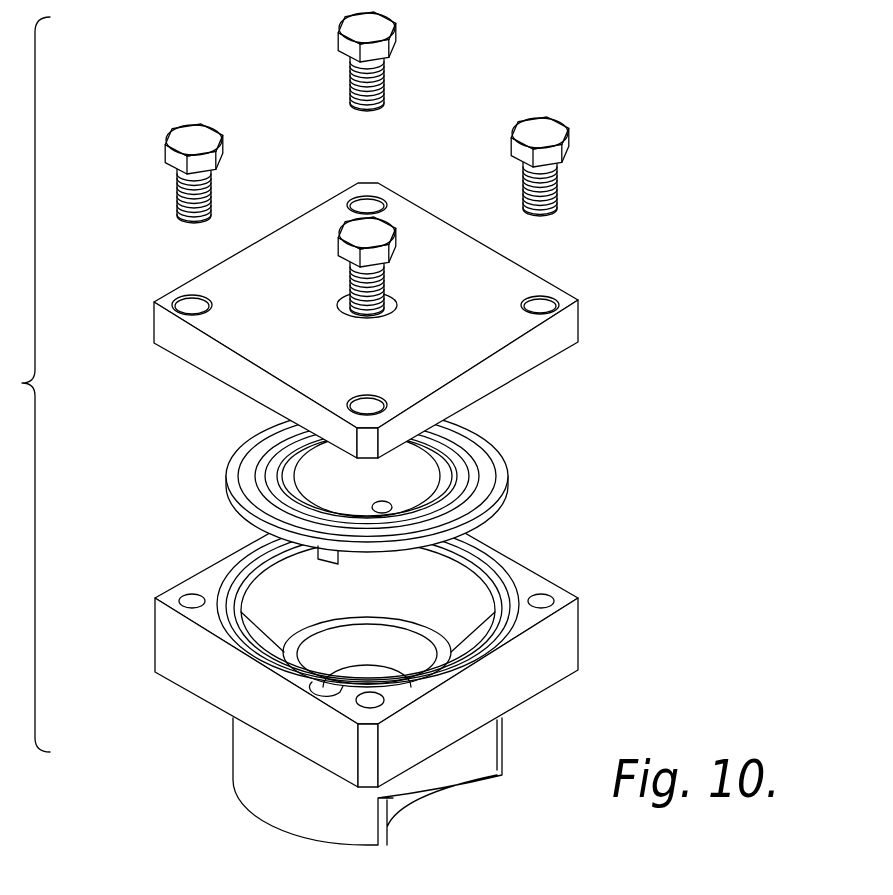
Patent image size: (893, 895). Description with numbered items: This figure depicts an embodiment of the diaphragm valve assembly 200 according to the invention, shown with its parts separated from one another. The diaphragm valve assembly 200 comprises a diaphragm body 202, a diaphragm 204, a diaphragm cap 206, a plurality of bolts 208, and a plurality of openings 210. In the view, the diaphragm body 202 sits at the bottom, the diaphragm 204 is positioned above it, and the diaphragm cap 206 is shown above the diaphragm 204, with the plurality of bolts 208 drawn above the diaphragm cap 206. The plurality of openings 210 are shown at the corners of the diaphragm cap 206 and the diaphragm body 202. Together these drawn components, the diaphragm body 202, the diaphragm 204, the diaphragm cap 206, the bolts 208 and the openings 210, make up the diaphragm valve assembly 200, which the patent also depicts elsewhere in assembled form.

The diaphragm valve assembly 200 is at (600, 505).
The diaphragm body 202 is at (573, 658).
The diaphragm 204 is at (497, 445).
The diaphragm cap 206 is at (577, 328).
The bolts 208 is at (192, 135).
The openings 210 is at (367, 200).